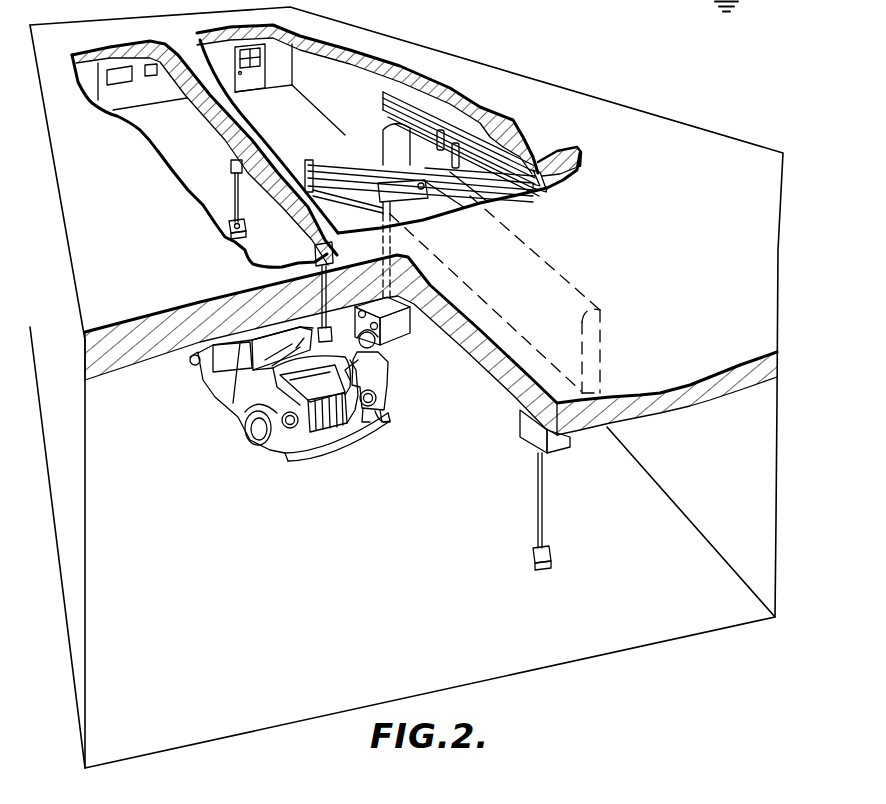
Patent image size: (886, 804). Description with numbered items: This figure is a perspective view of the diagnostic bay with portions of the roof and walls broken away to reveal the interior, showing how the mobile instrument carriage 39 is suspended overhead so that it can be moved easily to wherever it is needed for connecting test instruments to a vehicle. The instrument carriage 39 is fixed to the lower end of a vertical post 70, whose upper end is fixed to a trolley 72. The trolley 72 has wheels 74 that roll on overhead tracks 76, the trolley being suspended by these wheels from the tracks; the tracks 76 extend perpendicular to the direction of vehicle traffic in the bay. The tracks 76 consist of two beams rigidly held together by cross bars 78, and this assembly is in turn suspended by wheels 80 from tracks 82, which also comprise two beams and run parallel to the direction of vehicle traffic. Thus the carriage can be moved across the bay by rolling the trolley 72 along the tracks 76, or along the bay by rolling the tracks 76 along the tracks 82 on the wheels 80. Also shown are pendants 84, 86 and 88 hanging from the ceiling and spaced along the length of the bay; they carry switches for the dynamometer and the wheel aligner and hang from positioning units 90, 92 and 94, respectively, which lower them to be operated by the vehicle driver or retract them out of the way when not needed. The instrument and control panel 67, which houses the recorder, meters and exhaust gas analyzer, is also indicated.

The instrument carriage 39 is at (396, 332).
The instrument and control panel 67 is at (545, 262).
The vertical post 70 is at (400, 205).
The trolley 72 is at (480, 200).
The wheels 74 is at (393, 170).
The overhead tracks 76 is at (334, 175).
The cross bars 78 is at (323, 180).
The wheels 80 is at (448, 148).
The tracks 82 is at (384, 95).
The pendant 84 is at (244, 233).
The pendant 86 is at (340, 337).
The pendant 88 is at (550, 562).
The positioning unit 90 is at (231, 163).
The positioning unit 92 is at (304, 282).
The positioning unit 94 is at (556, 455).